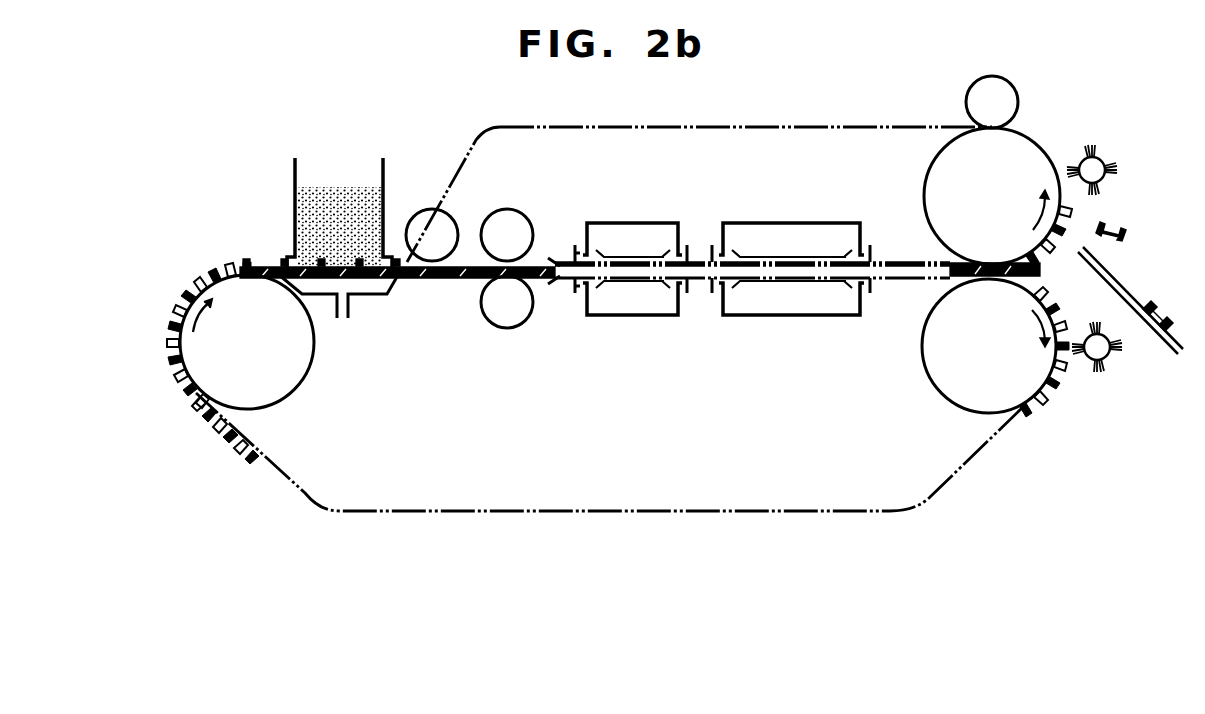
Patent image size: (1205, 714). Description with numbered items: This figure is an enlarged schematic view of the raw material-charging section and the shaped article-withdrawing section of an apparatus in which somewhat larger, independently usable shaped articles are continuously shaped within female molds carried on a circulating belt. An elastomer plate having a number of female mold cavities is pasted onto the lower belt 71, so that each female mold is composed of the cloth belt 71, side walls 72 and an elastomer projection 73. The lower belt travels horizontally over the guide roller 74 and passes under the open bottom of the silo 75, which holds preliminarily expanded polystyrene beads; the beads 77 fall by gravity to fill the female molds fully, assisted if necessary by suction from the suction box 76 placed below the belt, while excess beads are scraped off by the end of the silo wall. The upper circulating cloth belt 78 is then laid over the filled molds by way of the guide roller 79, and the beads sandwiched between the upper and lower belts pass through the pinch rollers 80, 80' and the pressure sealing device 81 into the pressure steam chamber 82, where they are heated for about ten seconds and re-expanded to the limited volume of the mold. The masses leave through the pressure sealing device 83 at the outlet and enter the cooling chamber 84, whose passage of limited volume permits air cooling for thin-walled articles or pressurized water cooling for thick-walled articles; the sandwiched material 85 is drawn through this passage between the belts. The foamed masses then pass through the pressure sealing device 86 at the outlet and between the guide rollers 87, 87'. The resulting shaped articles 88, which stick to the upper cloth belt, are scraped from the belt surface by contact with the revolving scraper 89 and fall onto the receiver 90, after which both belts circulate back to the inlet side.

The lower belt 71 is at (297, 494).
The side walls 72 is at (240, 447).
The elastomer projection 73 is at (221, 428).
The guide roller 74 is at (306, 376).
The silo 75 is at (295, 218).
The suction box 76 is at (370, 297).
The beads 77 is at (350, 192).
The upper circulating cloth belt 78 is at (447, 182).
The guide roller 79 is at (451, 217).
The pinch roller 80' is at (526, 218).
The pinch roller 80 is at (525, 321).
The pressure sealing device 81 is at (558, 260).
The pressure steam chamber 82 is at (642, 222).
The pressure sealing device 83 is at (703, 258).
The cooling chamber 84 is at (795, 222).
The sheet 85 is at (790, 273).
The pressure sealing device 86 is at (893, 258).
The guide roller 87' is at (971, 170).
The guide roller 87 is at (971, 346).
The shaped articles 88 is at (1120, 229).
The revolving scraper 89 is at (1102, 160).
The receiver 90 is at (1128, 289).